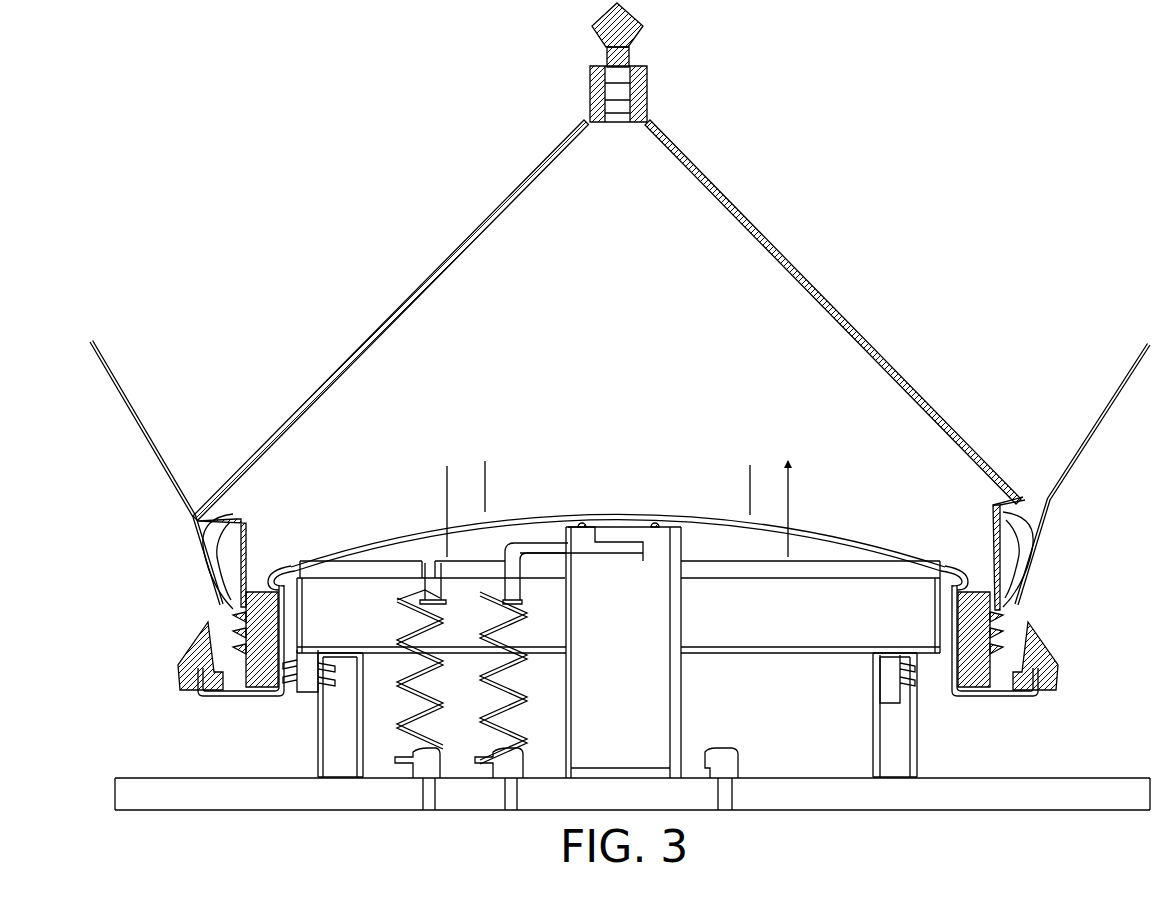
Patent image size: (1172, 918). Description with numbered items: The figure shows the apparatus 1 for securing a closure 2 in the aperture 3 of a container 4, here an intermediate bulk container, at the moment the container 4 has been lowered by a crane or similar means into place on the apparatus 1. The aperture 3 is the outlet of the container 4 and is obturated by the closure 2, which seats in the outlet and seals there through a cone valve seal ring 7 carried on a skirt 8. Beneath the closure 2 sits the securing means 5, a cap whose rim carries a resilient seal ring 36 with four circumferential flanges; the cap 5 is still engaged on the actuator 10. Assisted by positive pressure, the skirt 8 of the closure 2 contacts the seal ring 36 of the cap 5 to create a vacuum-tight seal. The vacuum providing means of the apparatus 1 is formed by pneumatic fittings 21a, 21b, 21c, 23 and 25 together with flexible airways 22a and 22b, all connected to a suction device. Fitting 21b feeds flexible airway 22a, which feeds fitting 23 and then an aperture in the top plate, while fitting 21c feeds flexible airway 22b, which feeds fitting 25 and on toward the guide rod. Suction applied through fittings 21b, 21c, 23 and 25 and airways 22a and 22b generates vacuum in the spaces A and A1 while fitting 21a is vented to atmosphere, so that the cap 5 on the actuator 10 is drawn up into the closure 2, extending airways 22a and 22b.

The apparatus 1 is at (316, 832).
The closure 2 is at (746, 217).
The aperture 3 is at (333, 504).
The container 4 is at (1110, 426).
The securing means 5 is at (895, 542).
The cone valve seal ring 7 is at (1034, 524).
The skirt 8 is at (997, 550).
The actuator 10 is at (958, 692).
The pneumatic fitting 21a is at (728, 772).
The pneumatic fitting 21b is at (425, 763).
The pneumatic fitting 21c is at (512, 770).
The flexible airway 22a is at (400, 722).
The flexible airway 22b is at (527, 716).
The pneumatic fitting 23 is at (425, 592).
The pneumatic fitting 25 is at (520, 598).
The resilient seal ring 36 is at (990, 640).
The vacuum space A is at (471, 404).
The vacuum space A1 is at (503, 556).